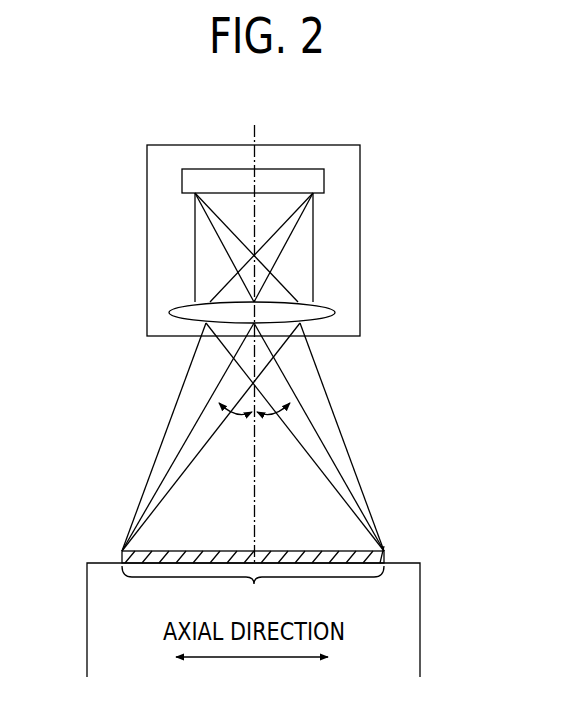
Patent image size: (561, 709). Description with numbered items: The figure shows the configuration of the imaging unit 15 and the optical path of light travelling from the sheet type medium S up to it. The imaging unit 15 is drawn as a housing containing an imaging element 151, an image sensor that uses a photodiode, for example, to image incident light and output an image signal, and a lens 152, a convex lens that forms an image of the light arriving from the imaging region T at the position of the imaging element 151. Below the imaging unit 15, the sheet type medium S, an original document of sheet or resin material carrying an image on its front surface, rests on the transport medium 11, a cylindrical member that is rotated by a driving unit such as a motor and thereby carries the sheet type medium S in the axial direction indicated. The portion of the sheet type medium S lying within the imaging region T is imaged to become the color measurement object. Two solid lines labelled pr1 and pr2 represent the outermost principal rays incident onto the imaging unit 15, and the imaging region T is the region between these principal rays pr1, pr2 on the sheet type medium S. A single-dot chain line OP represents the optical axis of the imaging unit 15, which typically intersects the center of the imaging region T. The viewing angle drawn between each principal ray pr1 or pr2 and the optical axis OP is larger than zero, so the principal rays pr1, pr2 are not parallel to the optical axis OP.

The imaging unit 15 is at (361, 163).
The imaging element 151 is at (314, 188).
The lens 152 is at (336, 311).
The transport medium 11 is at (422, 563).
The sheet type medium S is at (283, 551).
The imaging region T is at (253, 589).
The optical axis OP is at (254, 330).
The principal ray pr1 is at (194, 430).
The principal ray pr2 is at (314, 430).